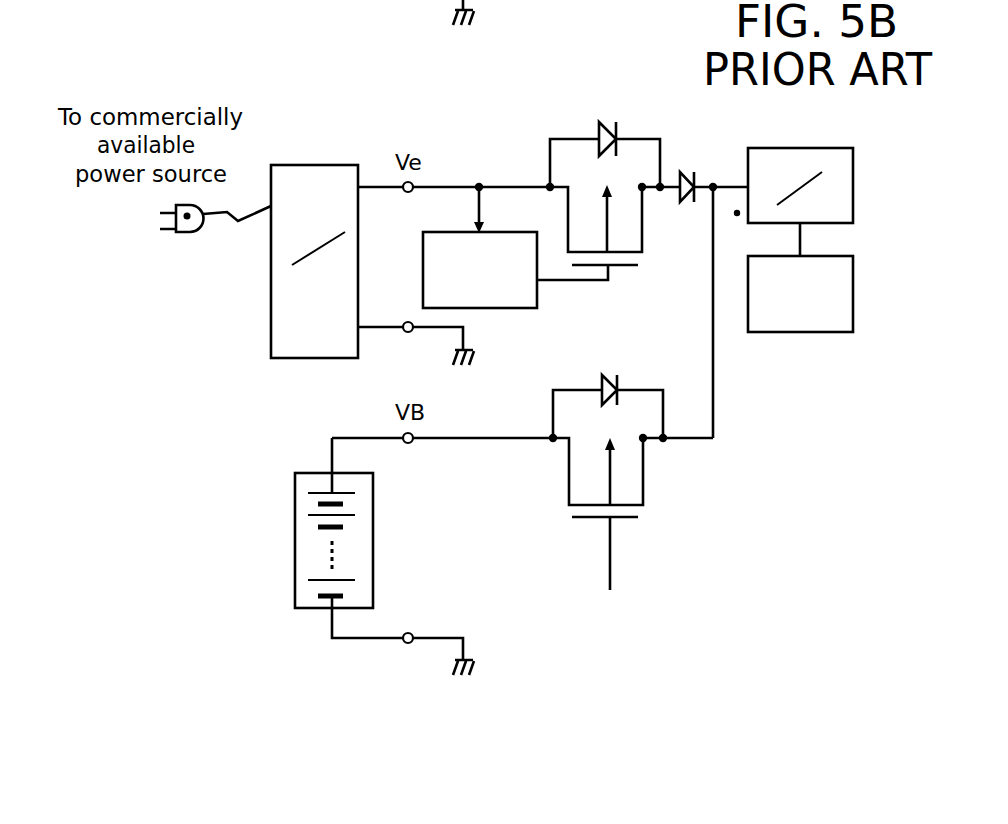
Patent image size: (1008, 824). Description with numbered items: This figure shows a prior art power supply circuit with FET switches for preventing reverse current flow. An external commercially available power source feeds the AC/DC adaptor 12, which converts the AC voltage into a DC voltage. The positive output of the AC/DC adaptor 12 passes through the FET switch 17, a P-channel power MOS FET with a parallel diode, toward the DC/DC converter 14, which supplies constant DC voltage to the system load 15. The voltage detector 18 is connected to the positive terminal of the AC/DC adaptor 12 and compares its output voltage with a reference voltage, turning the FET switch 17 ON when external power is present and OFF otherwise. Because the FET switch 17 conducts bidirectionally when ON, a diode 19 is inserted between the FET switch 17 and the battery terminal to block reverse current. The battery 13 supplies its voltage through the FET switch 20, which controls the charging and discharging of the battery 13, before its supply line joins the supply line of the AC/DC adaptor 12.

The AC/DC adaptor 12 is at (317, 163).
The battery 13 is at (373, 523).
The DC/DC converter 14 is at (853, 168).
The system load 15 is at (853, 277).
The FET switch 17 is at (653, 228).
The voltage detector 18 is at (422, 267).
The diode 19 is at (693, 160).
The FET switch 20 is at (654, 471).